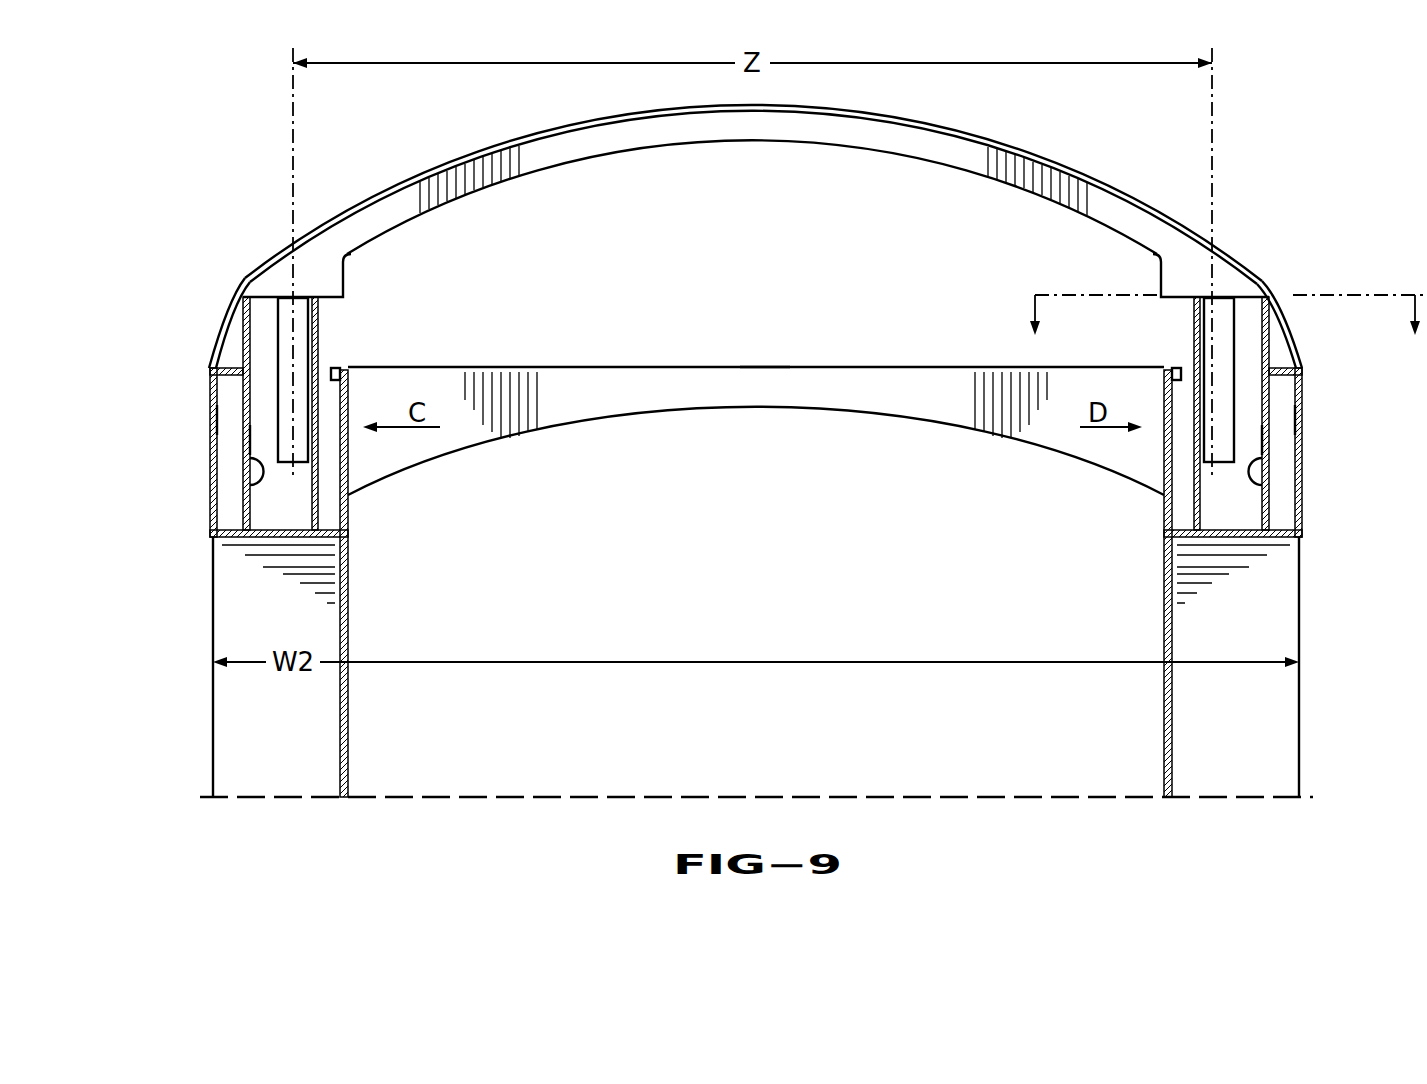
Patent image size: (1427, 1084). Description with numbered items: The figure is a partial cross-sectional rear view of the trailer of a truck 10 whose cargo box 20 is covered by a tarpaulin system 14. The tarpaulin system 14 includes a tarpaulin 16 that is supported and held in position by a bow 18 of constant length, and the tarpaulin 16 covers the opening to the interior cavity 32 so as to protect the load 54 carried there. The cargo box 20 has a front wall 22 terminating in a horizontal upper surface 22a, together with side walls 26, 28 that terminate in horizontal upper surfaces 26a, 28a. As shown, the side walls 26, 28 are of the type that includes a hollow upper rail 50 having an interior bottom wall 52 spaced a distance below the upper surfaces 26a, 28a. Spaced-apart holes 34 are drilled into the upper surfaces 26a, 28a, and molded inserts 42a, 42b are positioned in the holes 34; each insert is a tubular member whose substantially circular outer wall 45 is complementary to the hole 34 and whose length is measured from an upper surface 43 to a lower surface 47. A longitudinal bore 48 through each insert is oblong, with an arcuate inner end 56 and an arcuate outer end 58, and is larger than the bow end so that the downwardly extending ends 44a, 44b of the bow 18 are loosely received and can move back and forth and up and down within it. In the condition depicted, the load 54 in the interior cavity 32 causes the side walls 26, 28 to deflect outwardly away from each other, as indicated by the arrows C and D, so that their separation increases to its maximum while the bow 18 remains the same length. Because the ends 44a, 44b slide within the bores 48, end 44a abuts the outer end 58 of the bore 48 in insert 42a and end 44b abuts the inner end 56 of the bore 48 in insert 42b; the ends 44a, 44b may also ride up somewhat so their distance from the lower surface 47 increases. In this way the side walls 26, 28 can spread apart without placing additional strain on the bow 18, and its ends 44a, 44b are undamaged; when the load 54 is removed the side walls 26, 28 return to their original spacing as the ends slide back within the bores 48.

The truck 10 is at (1222, 330).
The tarpaulin system 14 is at (1031, 143).
The tarpaulin 16 is at (558, 127).
The bow 18 is at (758, 142).
The cargo box 20 is at (1325, 735).
The front wall 22 is at (840, 365).
The upper surface of front wall 22a is at (766, 365).
The side wall 26 is at (205, 708).
The upper surface of side wall 26a is at (235, 368).
The side wall 28 is at (1310, 702).
The upper surface of side wall 28a is at (1278, 368).
The interior cavity 32 is at (563, 400).
The hole 34 is at (340, 370).
The insert 42a is at (330, 322).
The insert 42b is at (1180, 322).
The upper surface of insert 43 is at (322, 296).
The bow end 44a is at (277, 324).
The bow end 44b is at (1233, 331).
The outer wall of insert 45 is at (247, 440).
The lower surface of insert 47 is at (220, 515).
The longitudinal bore 48 is at (240, 397).
The hollow upper rail 50 is at (213, 422).
The interior bottom wall 52 is at (216, 505).
The load 54 is at (697, 433).
The inner end of bore 56 is at (247, 482).
The outer end of bore 58 is at (1265, 480).